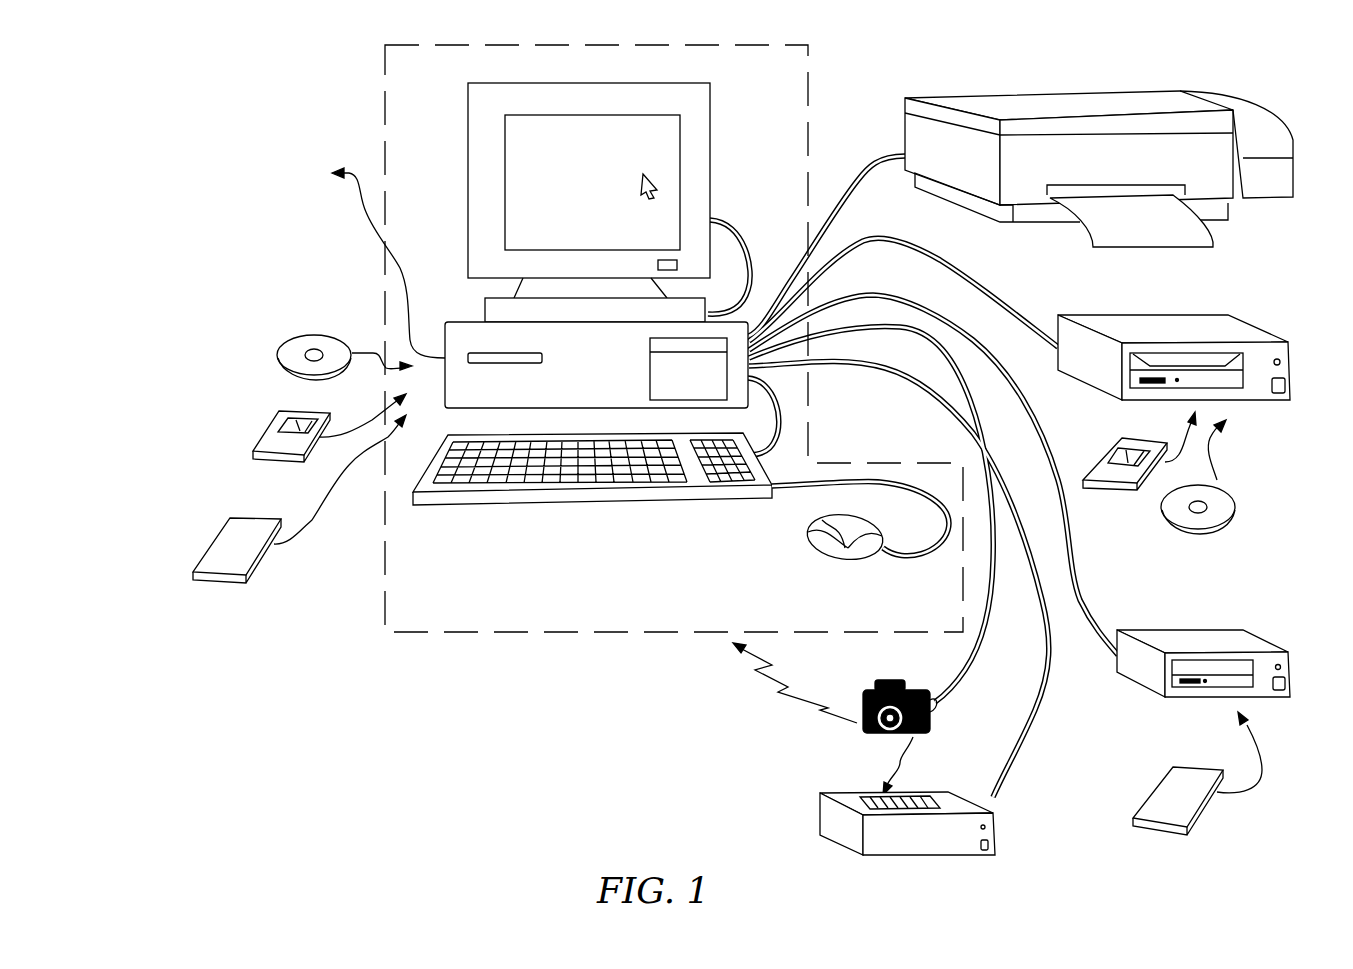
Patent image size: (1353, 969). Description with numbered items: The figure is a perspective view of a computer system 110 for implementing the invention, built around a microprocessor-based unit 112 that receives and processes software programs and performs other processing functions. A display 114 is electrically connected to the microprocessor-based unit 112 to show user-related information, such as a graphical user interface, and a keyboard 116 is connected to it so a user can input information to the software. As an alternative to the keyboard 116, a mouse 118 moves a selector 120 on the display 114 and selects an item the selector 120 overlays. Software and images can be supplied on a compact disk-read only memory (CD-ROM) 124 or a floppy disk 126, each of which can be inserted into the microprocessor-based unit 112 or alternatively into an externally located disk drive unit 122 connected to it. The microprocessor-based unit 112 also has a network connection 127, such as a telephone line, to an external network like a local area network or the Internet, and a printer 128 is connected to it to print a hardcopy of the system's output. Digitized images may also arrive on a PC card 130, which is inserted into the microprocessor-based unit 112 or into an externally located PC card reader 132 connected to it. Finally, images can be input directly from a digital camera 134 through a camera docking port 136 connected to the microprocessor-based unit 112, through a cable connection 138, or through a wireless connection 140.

The computer system 110 is at (812, 97).
The microprocessor-based unit 112 is at (468, 322).
The display 114 is at (565, 83).
The keyboard 116 is at (440, 508).
The mouse 118 is at (833, 560).
The selector 120 is at (657, 178).
The externally located disk drive unit 122 is at (1144, 315).
The compact disk-read only memory (CD-ROM) 124 is at (332, 325).
The floppy disk 126 is at (272, 427).
The network connection 127 is at (369, 259).
The printer 128 is at (1060, 98).
The personal computer card (PC card) 130 is at (226, 530).
The externally located PC card reader 132 is at (1182, 630).
The digital camera 134 is at (903, 688).
The camera docking port 136 is at (842, 843).
The cable connection 138 is at (985, 598).
The wireless connection 140 is at (790, 683).